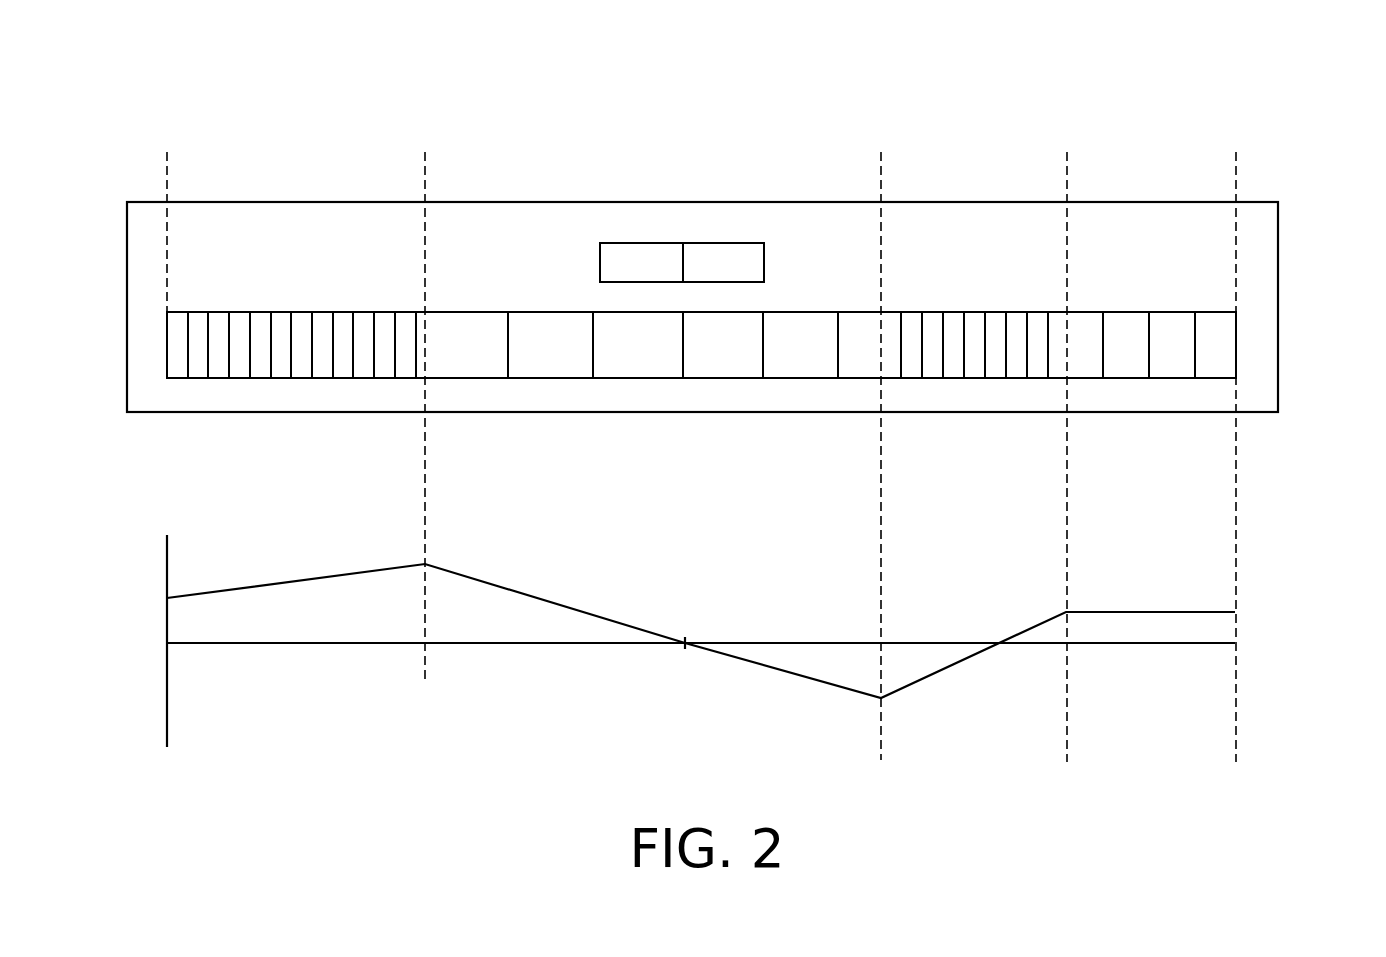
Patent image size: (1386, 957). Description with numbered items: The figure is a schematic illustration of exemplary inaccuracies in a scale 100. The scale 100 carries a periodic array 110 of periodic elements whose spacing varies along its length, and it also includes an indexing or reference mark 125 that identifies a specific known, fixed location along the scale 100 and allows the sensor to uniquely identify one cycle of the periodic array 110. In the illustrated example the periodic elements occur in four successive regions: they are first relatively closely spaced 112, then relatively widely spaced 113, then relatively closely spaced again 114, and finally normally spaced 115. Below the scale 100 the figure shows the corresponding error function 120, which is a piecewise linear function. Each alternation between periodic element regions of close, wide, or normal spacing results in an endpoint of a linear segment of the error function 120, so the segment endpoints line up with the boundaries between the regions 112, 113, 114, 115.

The scale 100 is at (1253, 201).
The periodic array 110 is at (1172, 311).
The relatively closely spaced region 112 is at (425, 175).
The relatively widely spaced region 113 is at (881, 183).
The relatively closely spaced region 114 is at (881, 183).
The normally spaced region 115 is at (1236, 183).
The error function 120 is at (1183, 612).
The indexing or reference mark 125 is at (764, 242).